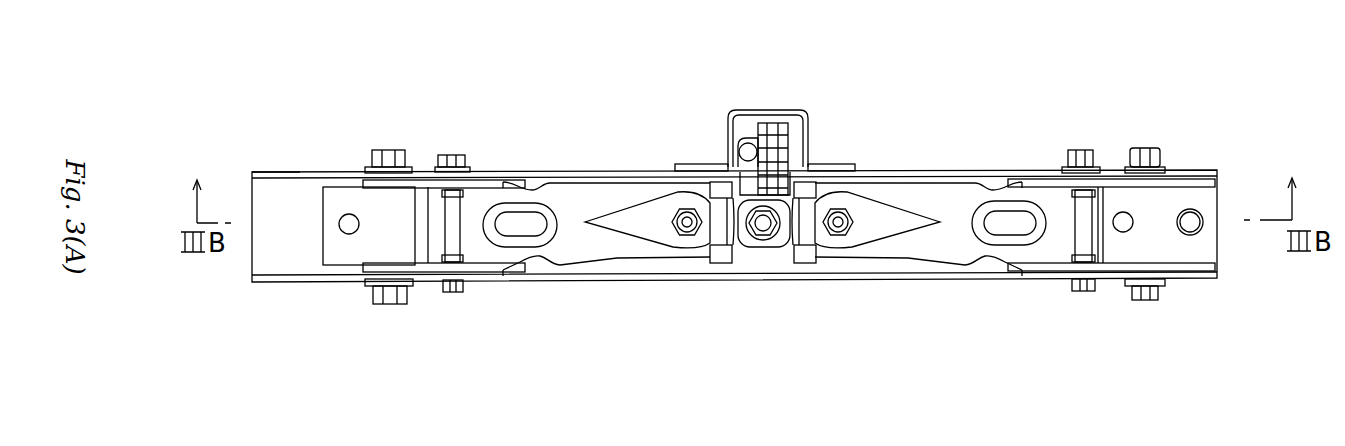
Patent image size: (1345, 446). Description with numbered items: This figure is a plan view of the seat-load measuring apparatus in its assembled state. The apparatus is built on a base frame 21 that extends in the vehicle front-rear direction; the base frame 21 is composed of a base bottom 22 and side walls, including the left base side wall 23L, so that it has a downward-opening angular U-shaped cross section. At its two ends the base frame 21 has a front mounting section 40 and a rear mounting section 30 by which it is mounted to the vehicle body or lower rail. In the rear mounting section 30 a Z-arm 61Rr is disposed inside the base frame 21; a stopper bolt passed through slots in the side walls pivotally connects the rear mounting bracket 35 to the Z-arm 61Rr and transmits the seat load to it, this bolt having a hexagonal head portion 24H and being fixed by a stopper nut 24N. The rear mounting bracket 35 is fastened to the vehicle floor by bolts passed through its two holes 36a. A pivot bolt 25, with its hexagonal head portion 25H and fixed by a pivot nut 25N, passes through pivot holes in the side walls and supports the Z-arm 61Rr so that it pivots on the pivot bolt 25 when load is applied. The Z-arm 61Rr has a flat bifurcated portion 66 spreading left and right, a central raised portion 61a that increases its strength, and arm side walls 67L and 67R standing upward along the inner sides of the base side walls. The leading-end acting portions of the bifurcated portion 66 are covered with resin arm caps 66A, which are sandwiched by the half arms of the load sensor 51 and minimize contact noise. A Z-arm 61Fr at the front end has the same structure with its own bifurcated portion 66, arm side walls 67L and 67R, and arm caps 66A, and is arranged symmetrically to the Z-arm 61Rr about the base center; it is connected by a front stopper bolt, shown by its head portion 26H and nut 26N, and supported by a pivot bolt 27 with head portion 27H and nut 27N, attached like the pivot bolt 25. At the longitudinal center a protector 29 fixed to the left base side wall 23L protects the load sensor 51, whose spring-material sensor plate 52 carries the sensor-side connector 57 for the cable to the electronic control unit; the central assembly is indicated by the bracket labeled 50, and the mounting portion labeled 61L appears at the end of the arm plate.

The base frame 21 is at (278, 170).
The base bottom 22 is at (250, 178).
The left base side wall 23L is at (265, 172).
The stopper nut 24N is at (1157, 148).
The hexagonal head portion of stopper bolt 24H is at (1150, 301).
The pivot bolt 25 is at (1068, 190).
The pivot nut 25N is at (1098, 149).
The hexagonal head portion of pivot bolt 25H is at (1085, 292).
The nut of stopper bolt 26N is at (380, 149).
The head portion of stopper bolt 26H is at (382, 305).
The pivot bolt 27 is at (463, 207).
The nut of pivot bolt 27N is at (447, 154).
The head portion of pivot bolt 27H is at (453, 293).
The protector 29 is at (752, 143).
The mounting section 30 is at (1211, 383).
The rear mounting bracket 35 is at (1203, 250).
The holes of rear mounting bracket 36a is at (1123, 233).
The mounting section 40 is at (513, 383).
The center mounting assembly 50 is at (868, 383).
The load sensor 51 is at (767, 262).
The sensor plate 52 is at (790, 248).
The sensor-side connector 57 is at (781, 163).
The Z-arm 61Fr is at (585, 192).
The Z-arm 61Rr is at (950, 202).
The left link plate end 61L is at (1037, 183).
The raised portion 61a is at (533, 217).
The bifurcated portion 66 is at (627, 196).
The arm caps 66A is at (703, 200).
The arm side wall 67L is at (498, 180).
The arm side wall 67R is at (503, 277).